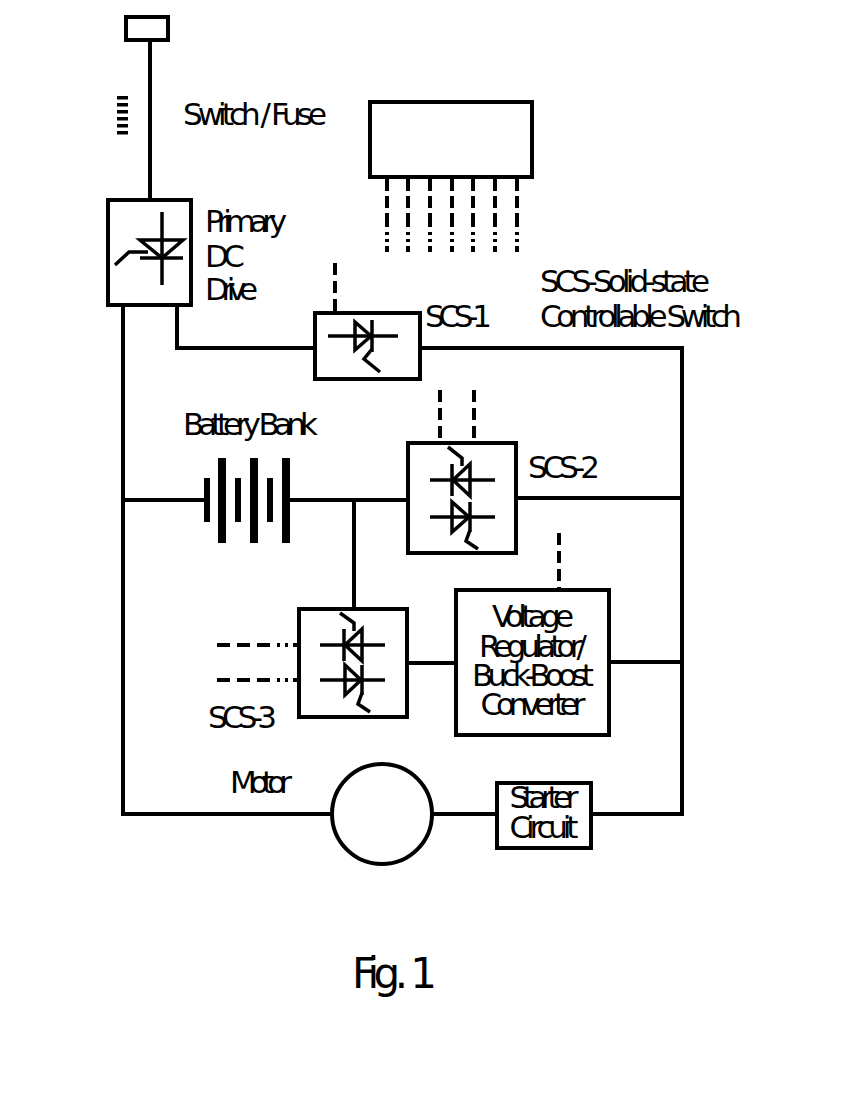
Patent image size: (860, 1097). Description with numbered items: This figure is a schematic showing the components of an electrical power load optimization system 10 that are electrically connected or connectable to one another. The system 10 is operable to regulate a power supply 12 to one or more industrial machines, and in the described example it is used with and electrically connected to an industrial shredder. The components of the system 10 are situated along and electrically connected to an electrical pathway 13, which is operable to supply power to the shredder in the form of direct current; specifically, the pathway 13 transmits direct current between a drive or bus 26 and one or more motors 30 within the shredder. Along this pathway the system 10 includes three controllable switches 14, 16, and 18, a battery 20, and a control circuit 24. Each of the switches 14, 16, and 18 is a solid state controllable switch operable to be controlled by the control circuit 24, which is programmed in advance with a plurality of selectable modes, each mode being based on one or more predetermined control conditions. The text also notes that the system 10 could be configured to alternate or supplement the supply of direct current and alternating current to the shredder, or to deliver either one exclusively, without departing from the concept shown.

The electrical power load optimization system 10 is at (700, 186).
The power supply 12 is at (126, 33).
The electrical pathway 13 is at (121, 373).
The controllable switch 14 is at (385, 312).
The controllable switch 16 is at (497, 443).
The controllable switch 18 is at (298, 623).
The battery 20 is at (203, 492).
The control circuit 24 is at (533, 142).
The drive or bus 26 is at (108, 245).
The motor 30 is at (333, 836).